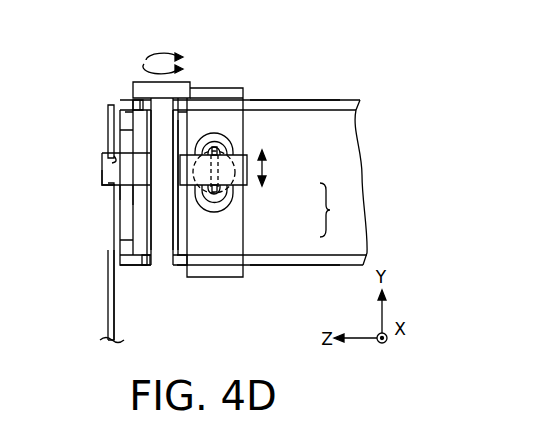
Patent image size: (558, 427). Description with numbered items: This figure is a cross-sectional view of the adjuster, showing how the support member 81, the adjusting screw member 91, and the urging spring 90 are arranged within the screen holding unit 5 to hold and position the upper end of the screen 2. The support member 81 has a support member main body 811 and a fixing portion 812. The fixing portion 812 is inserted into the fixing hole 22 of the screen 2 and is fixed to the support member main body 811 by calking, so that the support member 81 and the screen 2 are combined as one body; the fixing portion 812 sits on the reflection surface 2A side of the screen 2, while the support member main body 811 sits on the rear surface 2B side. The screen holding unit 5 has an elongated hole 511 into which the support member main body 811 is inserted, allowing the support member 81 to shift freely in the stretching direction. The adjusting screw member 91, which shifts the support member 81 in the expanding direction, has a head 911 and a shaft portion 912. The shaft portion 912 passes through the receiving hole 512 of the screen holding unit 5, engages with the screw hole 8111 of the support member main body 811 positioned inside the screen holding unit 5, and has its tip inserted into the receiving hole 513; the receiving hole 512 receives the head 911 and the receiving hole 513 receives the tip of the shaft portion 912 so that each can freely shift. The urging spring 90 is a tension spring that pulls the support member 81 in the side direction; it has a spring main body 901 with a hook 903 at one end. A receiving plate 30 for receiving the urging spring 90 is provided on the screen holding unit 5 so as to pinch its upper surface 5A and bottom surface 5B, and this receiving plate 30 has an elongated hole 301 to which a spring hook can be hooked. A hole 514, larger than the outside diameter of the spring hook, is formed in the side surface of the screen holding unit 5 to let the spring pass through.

The screen 2 is at (108, 112).
The reflection surface 2A is at (108, 333).
The rear surface 2B is at (116, 333).
The fixing hole 22 is at (105, 162).
The screen holding unit 5 is at (288, 100).
The upper surface 5A is at (315, 100).
The bottom surface 5B is at (288, 265).
The receiving plate 30 is at (238, 88).
The support member 81 is at (86, 174).
The support member main body 811 is at (128, 192).
The fixing portion 812 is at (102, 180).
The screw hole 8111 is at (143, 203).
The urging spring 90 is at (272, 187).
The spring main body 901 is at (237, 185).
The hook 903 is at (235, 195).
The adjusting screw member 91 is at (132, 60).
The head 911 is at (188, 82).
The shaft portion 912 is at (180, 230).
The elongated hole 301 is at (222, 146).
The elongated hole 511 is at (133, 215).
The receiving hole 512 is at (138, 105).
The receiving hole 513 is at (137, 262).
The hole 514 is at (211, 134).